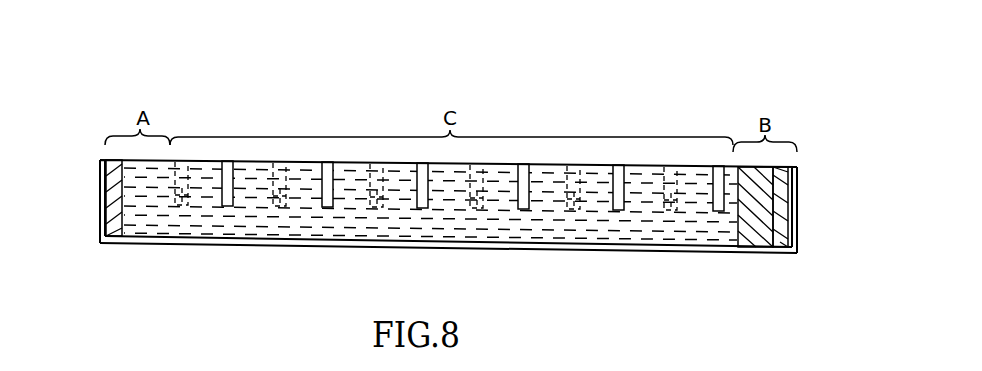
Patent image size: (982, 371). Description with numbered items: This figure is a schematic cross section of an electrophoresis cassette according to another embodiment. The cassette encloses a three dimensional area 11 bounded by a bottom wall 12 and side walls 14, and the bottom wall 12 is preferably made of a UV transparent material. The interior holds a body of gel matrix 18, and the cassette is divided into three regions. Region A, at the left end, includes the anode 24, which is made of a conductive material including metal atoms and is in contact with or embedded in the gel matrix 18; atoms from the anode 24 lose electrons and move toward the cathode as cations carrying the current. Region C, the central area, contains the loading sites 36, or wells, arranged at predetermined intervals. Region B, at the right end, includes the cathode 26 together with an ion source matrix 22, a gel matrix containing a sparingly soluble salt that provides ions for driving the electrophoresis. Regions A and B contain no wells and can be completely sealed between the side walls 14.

The three dimensional area 11 is at (78, 194).
The bottom wall 12 is at (258, 247).
The side wall 14 is at (100, 170).
The gel matrix 18 is at (414, 217).
The ion source matrix 22 is at (753, 223).
The anode 24 is at (118, 238).
The cathode 26 is at (783, 223).
The loading sites 36 is at (524, 165).